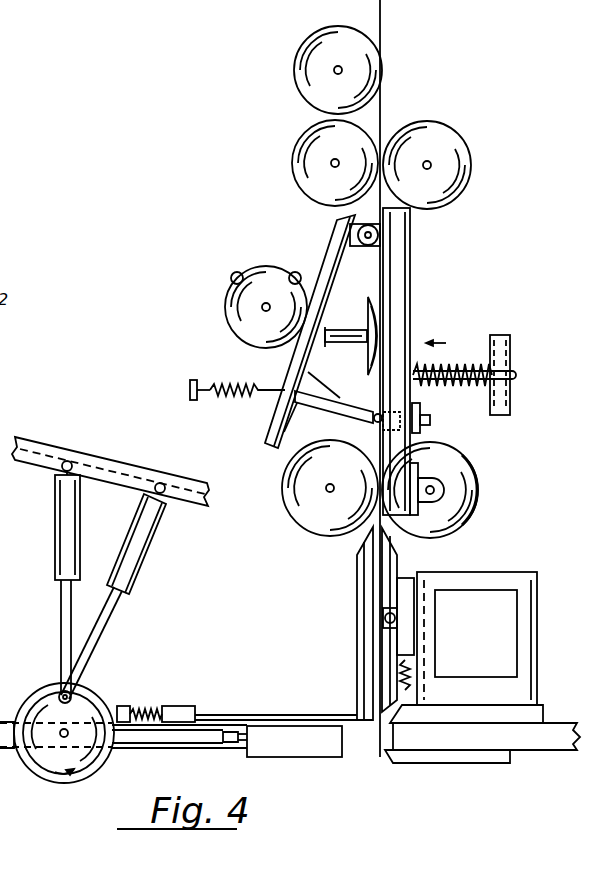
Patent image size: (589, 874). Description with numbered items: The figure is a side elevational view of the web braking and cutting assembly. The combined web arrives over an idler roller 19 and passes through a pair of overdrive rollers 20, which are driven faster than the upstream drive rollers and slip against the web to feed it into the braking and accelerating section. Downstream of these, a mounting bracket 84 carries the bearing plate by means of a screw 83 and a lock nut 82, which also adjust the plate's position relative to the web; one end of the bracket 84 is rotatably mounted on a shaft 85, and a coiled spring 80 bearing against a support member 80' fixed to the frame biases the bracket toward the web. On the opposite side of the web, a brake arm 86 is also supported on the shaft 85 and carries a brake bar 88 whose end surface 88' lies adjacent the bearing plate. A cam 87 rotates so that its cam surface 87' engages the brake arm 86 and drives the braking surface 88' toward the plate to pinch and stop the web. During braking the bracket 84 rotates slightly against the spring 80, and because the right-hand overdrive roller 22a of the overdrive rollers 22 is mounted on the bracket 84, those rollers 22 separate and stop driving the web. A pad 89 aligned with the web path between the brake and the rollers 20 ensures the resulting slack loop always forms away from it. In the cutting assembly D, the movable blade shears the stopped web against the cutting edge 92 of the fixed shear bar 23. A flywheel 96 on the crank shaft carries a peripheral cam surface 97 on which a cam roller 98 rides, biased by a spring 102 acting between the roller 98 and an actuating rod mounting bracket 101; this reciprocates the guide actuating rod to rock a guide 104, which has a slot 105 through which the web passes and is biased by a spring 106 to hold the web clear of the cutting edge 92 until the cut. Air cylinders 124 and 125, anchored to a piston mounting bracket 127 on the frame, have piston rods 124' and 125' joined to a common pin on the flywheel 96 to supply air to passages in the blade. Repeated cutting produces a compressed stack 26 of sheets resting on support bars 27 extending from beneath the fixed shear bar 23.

The idler roller 19 is at (313, 86).
The overdrive rollers 20 is at (308, 186).
The overdrive rollers 22 is at (481, 474).
The right-hand overdrive roller 22a is at (476, 508).
The fixed shear bar 23 is at (447, 716).
The compressed stack 26 is at (558, 745).
The support bars 27 is at (467, 757).
The coiled spring 80 is at (464, 358).
The support member 80' is at (521, 370).
The lock nut 82 is at (419, 410).
The screw 83 is at (432, 425).
The mounting bracket 84 is at (400, 282).
The shaft 85 is at (364, 247).
The brake arm 86 is at (273, 421).
The cam 87 is at (251, 309).
The cam surface 87' is at (258, 263).
The brake bar 88 is at (328, 402).
The end surface 88' is at (375, 431).
The pad 89 is at (365, 318).
The cutting edge 92 is at (386, 724).
The flywheel 96 is at (58, 772).
The peripheral cam surface 97 is at (36, 693).
The cam roller 98 is at (133, 706).
The actuating rod mounting bracket 101 is at (181, 706).
The spring 102 is at (150, 708).
The guide 104 is at (362, 640).
The slot 105 is at (374, 562).
The spring 106 is at (410, 672).
The air cylinder 124 is at (42, 520).
The piston rod 124' is at (39, 636).
The air cylinder 125 is at (150, 538).
The piston rod 125' is at (109, 643).
The piston mounting bracket 127 is at (117, 468).
The cutting assembly D is at (293, 765).